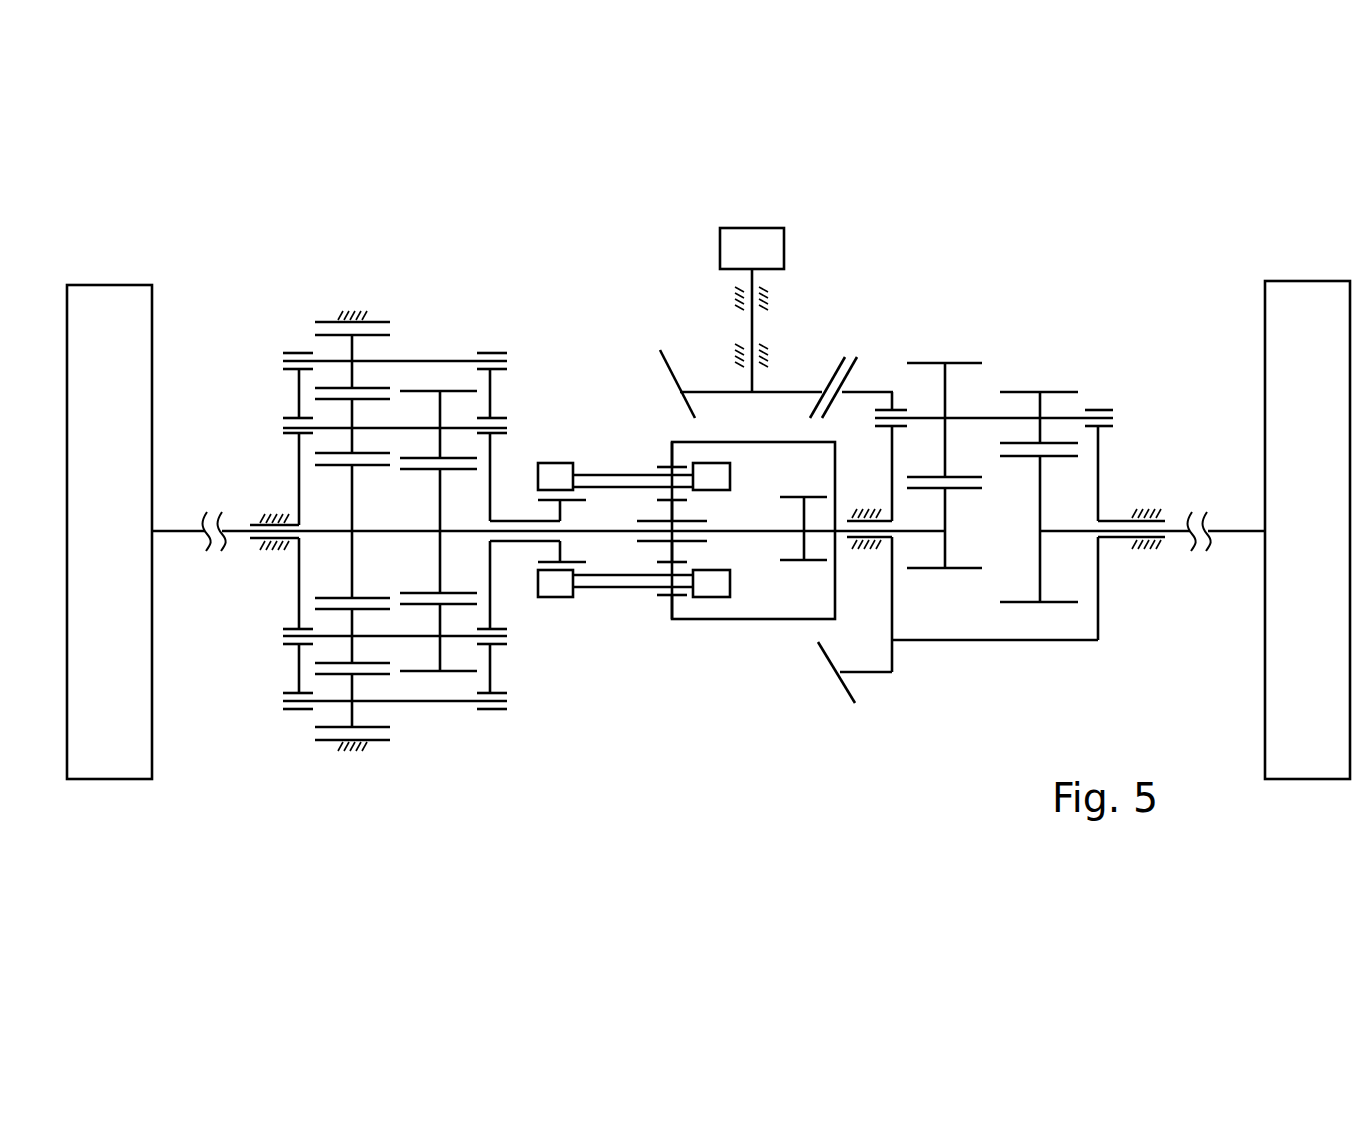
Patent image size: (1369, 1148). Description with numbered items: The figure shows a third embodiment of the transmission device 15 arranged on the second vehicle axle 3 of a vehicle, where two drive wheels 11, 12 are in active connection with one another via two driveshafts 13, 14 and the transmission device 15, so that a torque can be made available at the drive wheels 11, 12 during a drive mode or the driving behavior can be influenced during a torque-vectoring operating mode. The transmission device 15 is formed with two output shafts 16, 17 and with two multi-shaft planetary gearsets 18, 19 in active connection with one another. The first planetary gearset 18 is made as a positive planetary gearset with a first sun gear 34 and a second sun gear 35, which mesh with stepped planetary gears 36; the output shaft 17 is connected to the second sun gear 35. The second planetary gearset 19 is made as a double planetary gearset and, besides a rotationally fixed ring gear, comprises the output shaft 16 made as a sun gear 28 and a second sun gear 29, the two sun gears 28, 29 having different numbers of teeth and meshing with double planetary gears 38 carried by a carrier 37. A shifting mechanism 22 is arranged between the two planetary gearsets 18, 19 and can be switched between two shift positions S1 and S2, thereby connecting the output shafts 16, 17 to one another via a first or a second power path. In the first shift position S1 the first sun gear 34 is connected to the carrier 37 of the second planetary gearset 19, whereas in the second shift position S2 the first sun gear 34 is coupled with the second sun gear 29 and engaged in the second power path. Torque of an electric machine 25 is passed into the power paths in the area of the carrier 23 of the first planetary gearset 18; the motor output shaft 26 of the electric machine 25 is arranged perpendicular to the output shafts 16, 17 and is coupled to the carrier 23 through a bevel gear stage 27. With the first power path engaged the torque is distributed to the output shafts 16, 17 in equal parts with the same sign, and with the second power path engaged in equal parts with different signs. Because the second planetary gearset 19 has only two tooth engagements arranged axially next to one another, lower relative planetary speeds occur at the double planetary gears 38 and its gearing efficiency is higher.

The second vehicle axle 3 is at (205, 748).
The drive wheel 11 is at (108, 313).
The drive wheel 12 is at (1308, 313).
The driveshaft 13 is at (175, 522).
The driveshaft 14 is at (1227, 522).
The transmission device 15 is at (293, 297).
The output shaft 16 is at (238, 522).
The output shaft 17 is at (1180, 522).
The first planetary gearset 18 is at (976, 478).
The second planetary gearset 19 is at (377, 490).
The shifting mechanism 22 is at (603, 610).
The carrier 23 is at (893, 388).
The electric machine 25 is at (748, 226).
The motor output shaft 26 is at (752, 325).
The bevel gear stage 27 is at (843, 345).
The sun gear 28 is at (355, 582).
The second sun gear 29 is at (437, 545).
The first sun gear 34 is at (945, 550).
The second sun gear 35 is at (1040, 580).
The stepped planetary gears 36 is at (989, 360).
The carrier 37 is at (495, 583).
The double planetary gears 38 is at (392, 642).
The first shift position S1 is at (551, 448).
The second shift position S2 is at (795, 570).